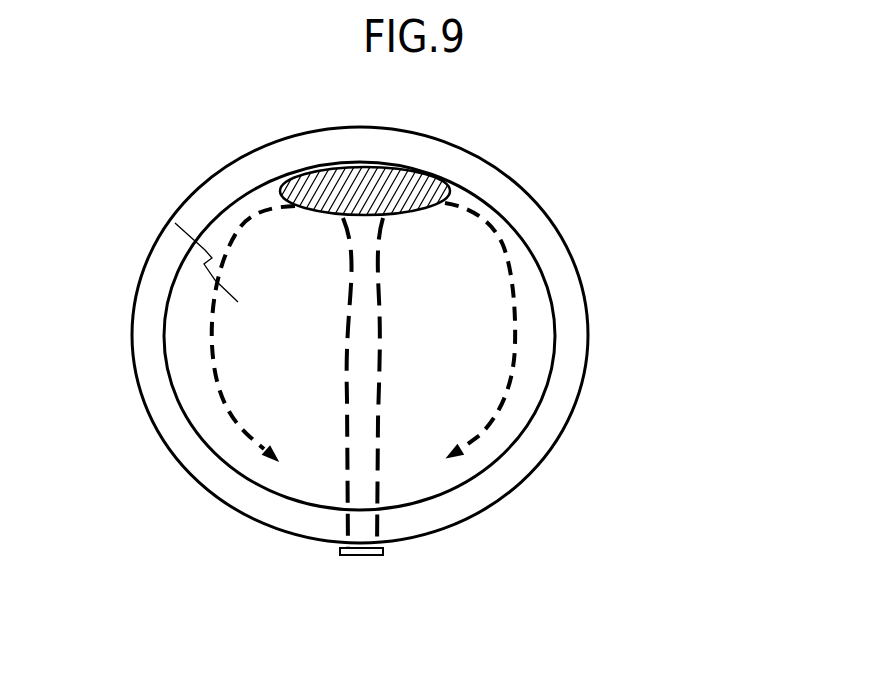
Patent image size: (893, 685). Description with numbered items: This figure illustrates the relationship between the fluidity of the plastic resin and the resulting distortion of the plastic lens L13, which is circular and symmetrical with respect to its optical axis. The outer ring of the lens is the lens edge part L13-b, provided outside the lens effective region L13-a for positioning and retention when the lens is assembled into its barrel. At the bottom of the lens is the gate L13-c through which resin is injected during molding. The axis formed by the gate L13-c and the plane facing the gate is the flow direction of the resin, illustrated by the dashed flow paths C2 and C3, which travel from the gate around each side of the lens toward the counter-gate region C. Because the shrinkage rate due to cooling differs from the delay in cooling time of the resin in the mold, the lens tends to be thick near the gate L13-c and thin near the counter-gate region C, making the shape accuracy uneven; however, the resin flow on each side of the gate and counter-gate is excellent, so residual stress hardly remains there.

The plastic lens L13 is at (405, 383).
The lens effective region L13-a is at (440, 243).
The lens edge part L13-b is at (568, 368).
The gate L13-c is at (363, 558).
The counter-gate region C is at (366, 195).
The flow direction axis C2 is at (385, 318).
The flow direction axis C3 is at (347, 323).